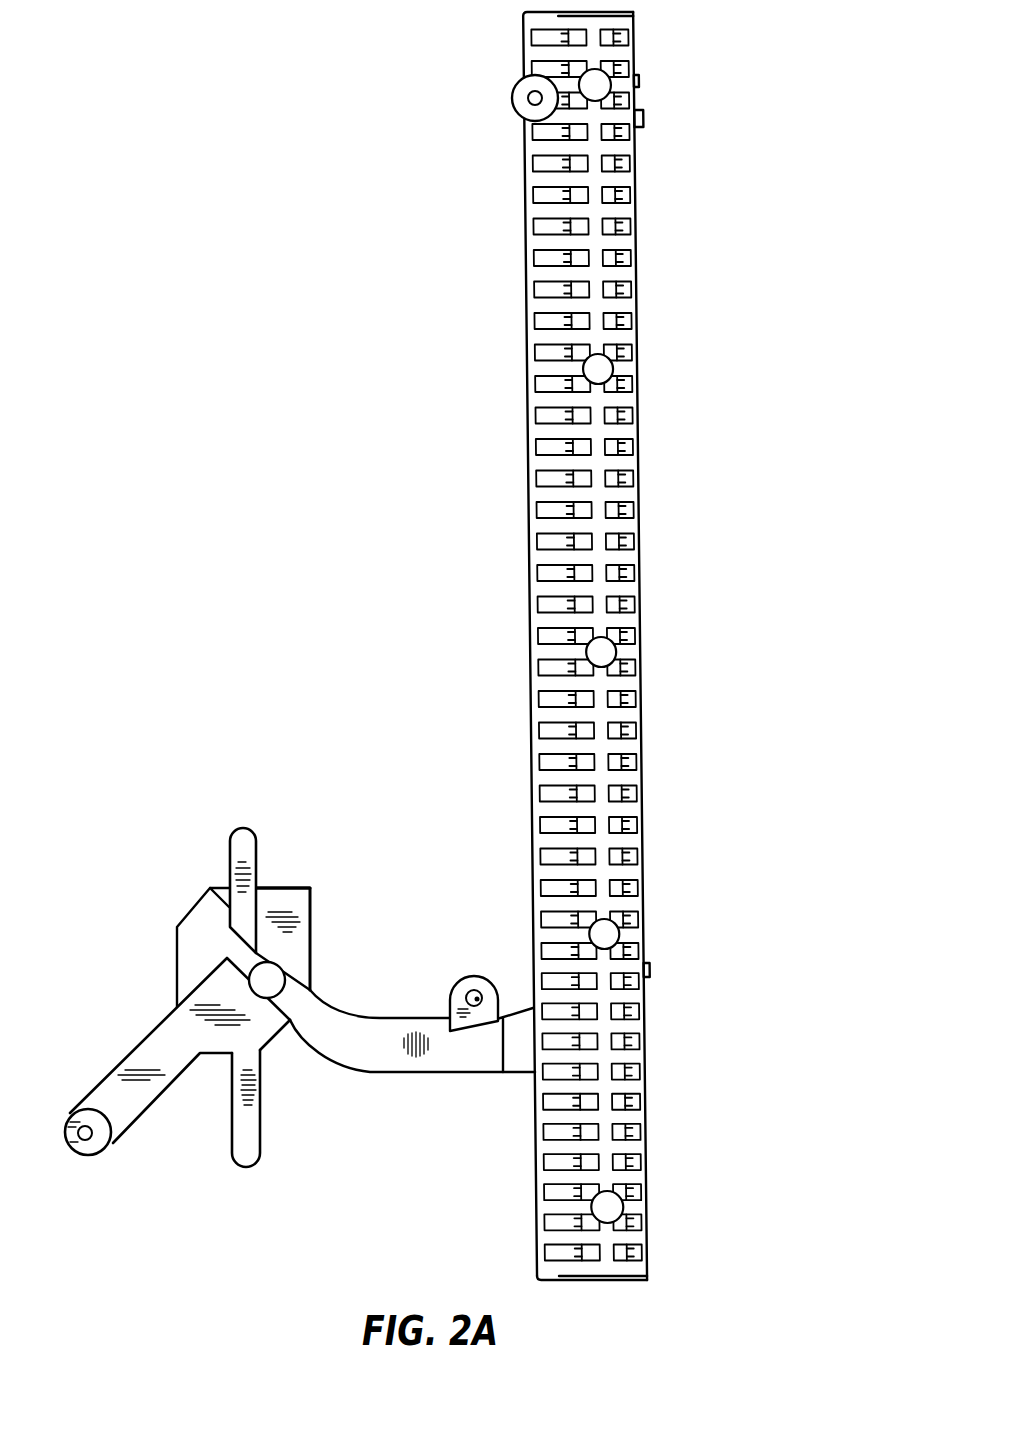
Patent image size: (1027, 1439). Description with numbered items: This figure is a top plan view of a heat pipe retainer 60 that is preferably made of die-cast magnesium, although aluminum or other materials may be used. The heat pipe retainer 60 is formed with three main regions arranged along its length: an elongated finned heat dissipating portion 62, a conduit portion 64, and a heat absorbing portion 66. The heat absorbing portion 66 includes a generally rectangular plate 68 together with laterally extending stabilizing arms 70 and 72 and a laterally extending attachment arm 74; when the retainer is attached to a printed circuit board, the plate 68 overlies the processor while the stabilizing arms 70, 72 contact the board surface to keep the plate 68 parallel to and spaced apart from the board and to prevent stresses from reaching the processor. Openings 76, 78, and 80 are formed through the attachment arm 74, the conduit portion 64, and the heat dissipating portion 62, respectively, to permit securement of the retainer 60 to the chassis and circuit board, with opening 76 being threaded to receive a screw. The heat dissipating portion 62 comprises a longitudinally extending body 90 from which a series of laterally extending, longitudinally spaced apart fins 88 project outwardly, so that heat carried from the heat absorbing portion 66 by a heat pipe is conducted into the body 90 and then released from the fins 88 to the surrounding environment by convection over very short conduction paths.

The heat pipe retainer 60 is at (598, 661).
The heat dissipating portion 62 is at (660, 632).
The conduit portion 64 is at (428, 1085).
The heat absorbing portion 66 is at (326, 910).
The plate 68 is at (295, 888).
The stabilizing arm 70 is at (253, 830).
The stabilizing arm 72 is at (262, 1132).
The attachment arm 74 is at (100, 1085).
The opening 76 is at (113, 1140).
The opening 78 is at (478, 991).
The opening 80 is at (534, 97).
The fins 88 is at (626, 40).
The body 90 is at (600, 1282).